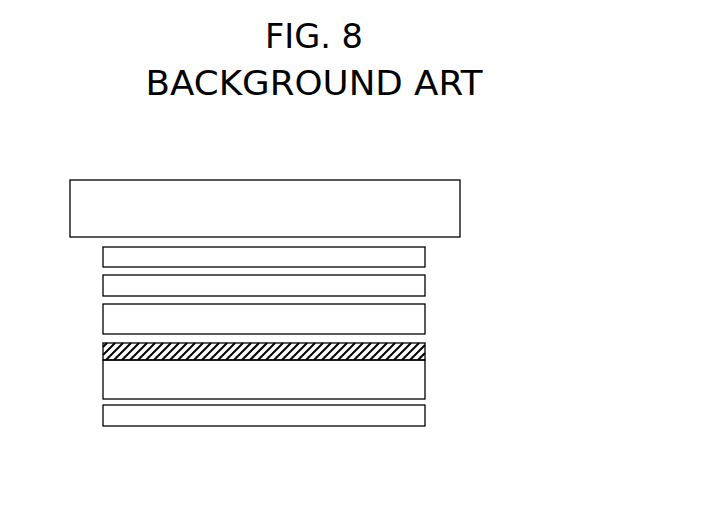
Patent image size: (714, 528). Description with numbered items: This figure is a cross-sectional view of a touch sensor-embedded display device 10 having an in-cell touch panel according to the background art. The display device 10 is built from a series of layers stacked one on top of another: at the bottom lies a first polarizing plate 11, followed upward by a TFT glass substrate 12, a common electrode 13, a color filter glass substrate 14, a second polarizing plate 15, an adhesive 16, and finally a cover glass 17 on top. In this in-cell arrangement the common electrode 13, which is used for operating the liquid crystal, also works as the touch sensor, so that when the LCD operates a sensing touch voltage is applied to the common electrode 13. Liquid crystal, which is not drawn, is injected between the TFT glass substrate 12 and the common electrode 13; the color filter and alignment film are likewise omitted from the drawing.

The display device 10 is at (80, 128).
The first polarizing plate 11 is at (425, 410).
The TFT glass substrate 12 is at (425, 379).
The common electrode 13 is at (425, 350).
The color filter glass substrate 14 is at (425, 318).
The second polarizing plate 15 is at (425, 283).
The adhesive 16 is at (425, 253).
The cover glass 17 is at (460, 203).